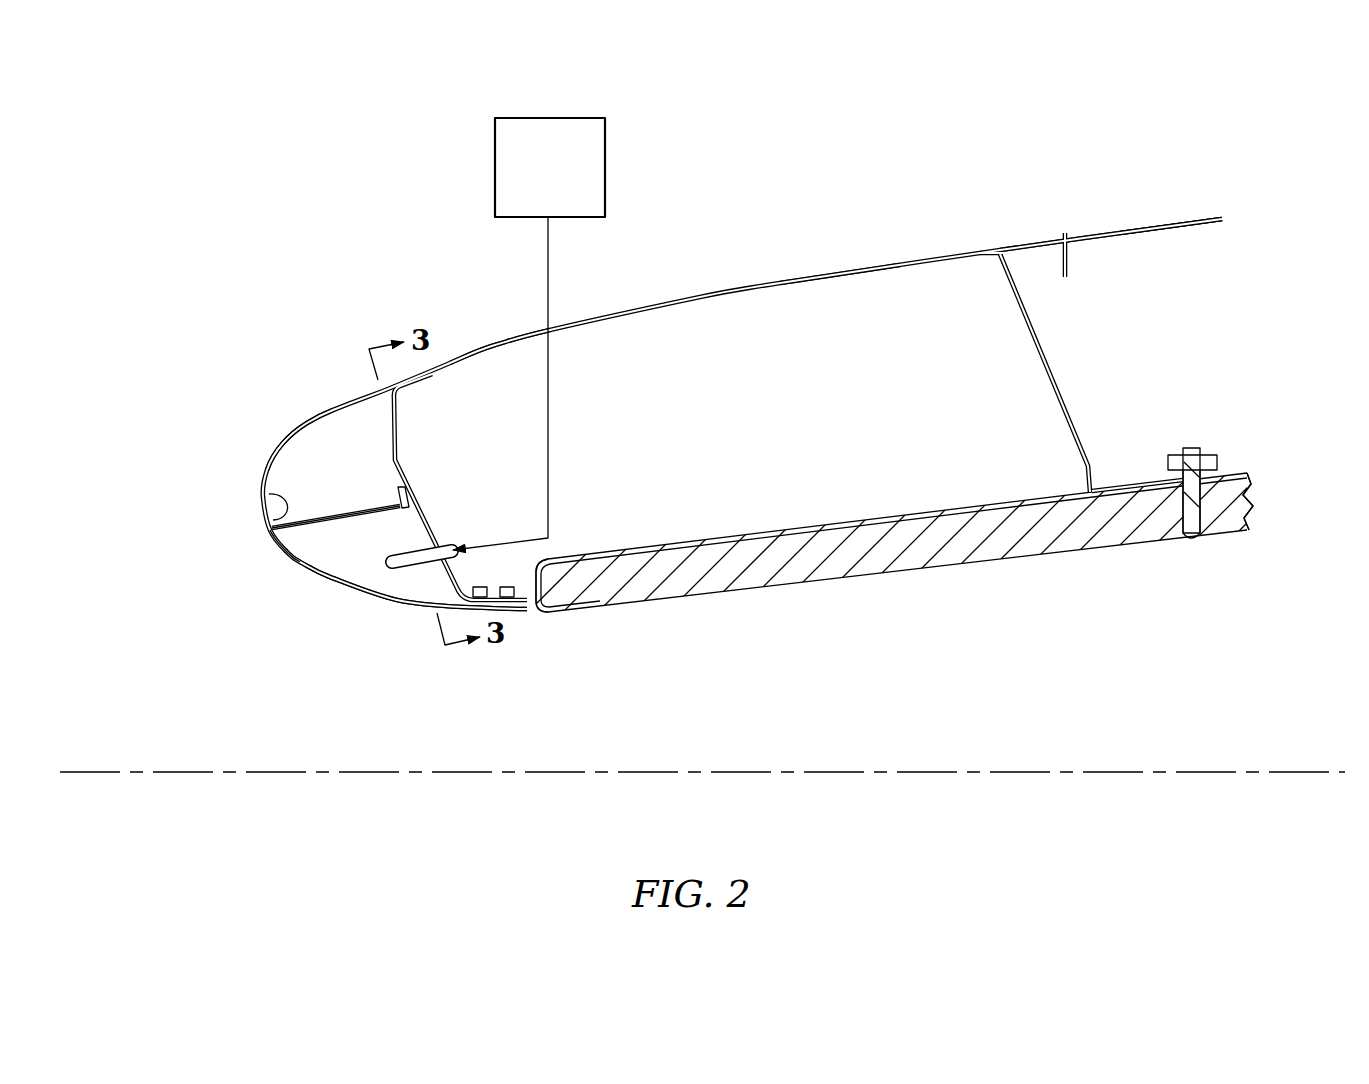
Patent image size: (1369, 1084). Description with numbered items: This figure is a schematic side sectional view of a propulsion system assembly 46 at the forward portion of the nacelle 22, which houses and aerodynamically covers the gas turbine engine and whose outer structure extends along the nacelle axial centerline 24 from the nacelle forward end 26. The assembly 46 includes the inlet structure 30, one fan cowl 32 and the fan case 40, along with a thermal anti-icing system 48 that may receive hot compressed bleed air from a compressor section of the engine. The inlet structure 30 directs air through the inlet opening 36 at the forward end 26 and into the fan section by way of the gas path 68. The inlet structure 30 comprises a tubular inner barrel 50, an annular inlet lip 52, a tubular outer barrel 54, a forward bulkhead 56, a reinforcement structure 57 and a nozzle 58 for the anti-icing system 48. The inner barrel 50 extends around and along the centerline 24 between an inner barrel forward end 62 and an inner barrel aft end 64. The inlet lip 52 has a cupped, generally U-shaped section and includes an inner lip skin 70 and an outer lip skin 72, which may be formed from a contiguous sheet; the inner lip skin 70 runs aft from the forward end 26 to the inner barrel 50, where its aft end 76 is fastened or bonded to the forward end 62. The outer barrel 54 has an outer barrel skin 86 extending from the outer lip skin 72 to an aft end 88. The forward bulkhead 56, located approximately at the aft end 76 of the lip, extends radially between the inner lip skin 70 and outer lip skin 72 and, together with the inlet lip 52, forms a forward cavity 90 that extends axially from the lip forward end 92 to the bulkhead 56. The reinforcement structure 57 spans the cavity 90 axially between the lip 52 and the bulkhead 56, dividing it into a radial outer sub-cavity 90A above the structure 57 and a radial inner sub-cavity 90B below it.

The nacelle 22 is at (1150, 178).
The nacelle axial centerline 24 is at (1262, 772).
The nacelle forward end 26 is at (277, 498).
The nacelle inlet structure 30 is at (742, 276).
The fan cowl 32 is at (1192, 212).
The inlet opening 36 is at (283, 674).
The fan case 40 is at (1252, 508).
The propulsion system assembly 46 is at (348, 230).
The thermal anti-icing system 48 is at (565, 180).
The inner barrel 50 is at (772, 586).
The inlet lip 52 is at (387, 599).
The outer barrel 54 is at (822, 266).
The forward bulkhead 56 is at (404, 420).
The reinforcement structure 57 is at (300, 563).
The nozzle 58 is at (417, 572).
The inner barrel forward end 62 is at (537, 613).
The inner barrel aft end 64 is at (1203, 534).
The gas path 68 is at (641, 736).
The inner lip skin 70 is at (330, 571).
The outer lip skin 72 is at (307, 422).
The aft end of inner lip skin 76 is at (528, 609).
The outer barrel skin 86 is at (495, 343).
The aft end of outer barrel 88 is at (1063, 234).
The forward cavity 90 is at (348, 424).
The radial outer sub-cavity 90A is at (368, 476).
The radial inner sub-cavity 90B is at (383, 561).
The forward end of inlet lip 92 is at (278, 523).